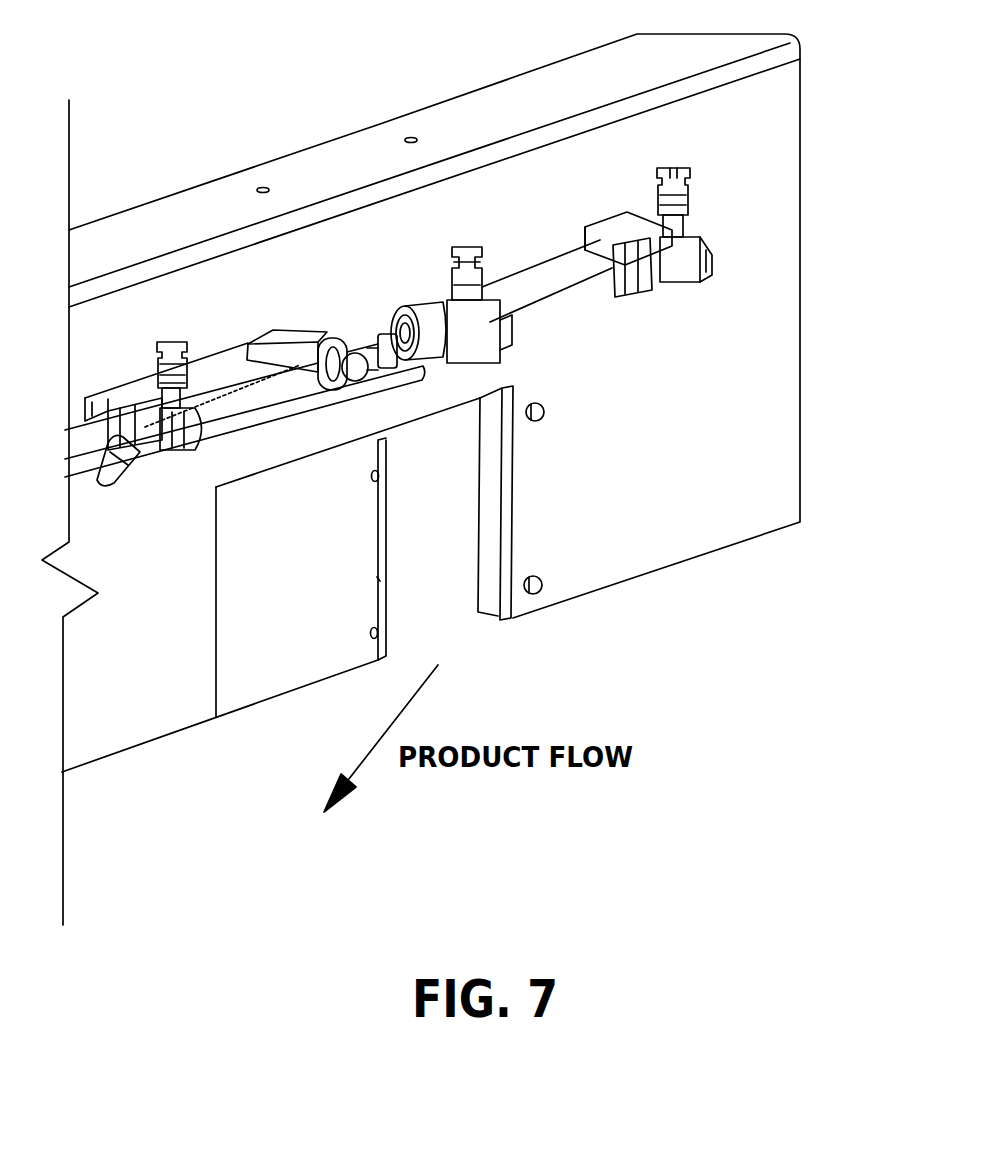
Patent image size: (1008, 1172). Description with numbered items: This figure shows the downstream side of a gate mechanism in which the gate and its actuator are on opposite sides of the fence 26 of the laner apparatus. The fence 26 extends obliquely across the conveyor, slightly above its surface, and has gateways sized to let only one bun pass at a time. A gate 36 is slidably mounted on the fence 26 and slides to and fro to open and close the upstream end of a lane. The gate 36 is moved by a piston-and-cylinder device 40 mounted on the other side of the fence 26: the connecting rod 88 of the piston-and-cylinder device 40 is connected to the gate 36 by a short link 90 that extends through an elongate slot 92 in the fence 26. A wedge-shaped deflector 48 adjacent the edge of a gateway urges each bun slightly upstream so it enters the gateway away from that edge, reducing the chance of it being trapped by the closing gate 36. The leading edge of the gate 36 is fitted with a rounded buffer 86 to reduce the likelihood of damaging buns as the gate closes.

The fence 26 is at (725, 360).
The gate 36 is at (248, 643).
The piston-and-cylinder device 40 is at (528, 242).
The wedge-shaped deflector 48 is at (494, 516).
The rounded buffer 86 is at (377, 577).
The connecting rod 88 is at (370, 333).
The short link 90 is at (312, 335).
The elongate slot 92 is at (220, 348).